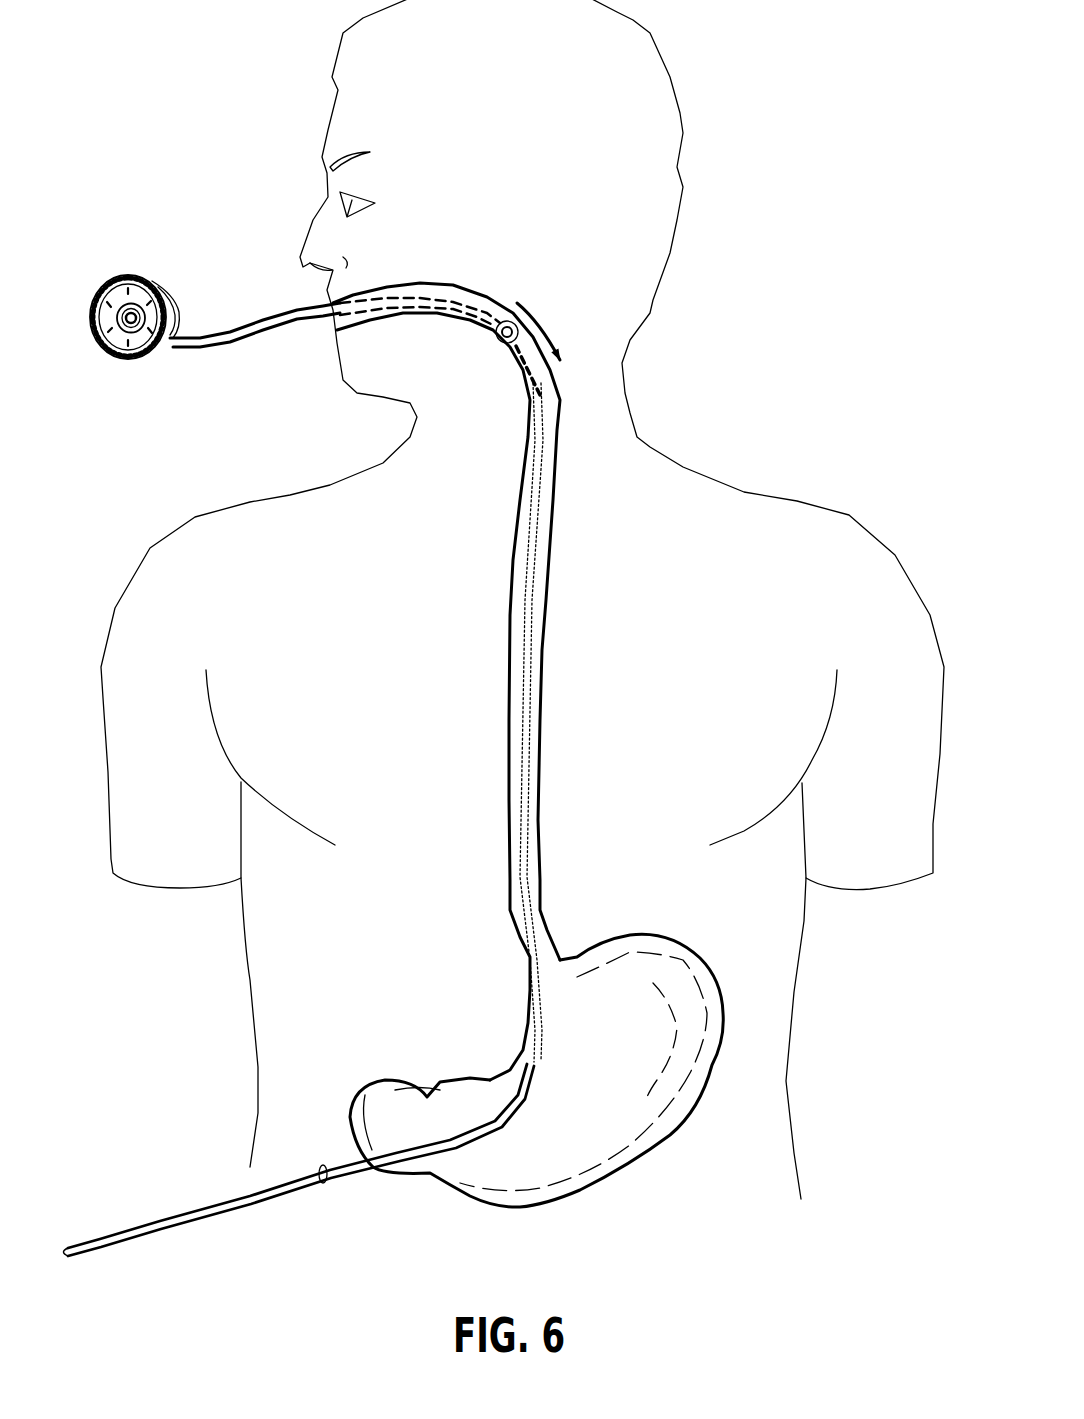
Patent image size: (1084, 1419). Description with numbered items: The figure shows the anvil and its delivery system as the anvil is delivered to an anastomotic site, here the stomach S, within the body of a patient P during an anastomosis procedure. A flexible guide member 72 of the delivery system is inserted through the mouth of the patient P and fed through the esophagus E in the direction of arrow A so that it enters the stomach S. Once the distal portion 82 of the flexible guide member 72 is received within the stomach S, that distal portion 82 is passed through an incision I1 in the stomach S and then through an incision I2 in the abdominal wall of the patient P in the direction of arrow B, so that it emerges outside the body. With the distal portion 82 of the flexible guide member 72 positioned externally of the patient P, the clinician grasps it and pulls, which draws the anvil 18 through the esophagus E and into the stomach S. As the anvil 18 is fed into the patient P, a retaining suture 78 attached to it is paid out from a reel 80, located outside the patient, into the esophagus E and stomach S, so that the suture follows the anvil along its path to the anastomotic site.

The reel 80 is at (121, 284).
The retaining suture 78 is at (234, 333).
The anvil 18 is at (492, 339).
The flexible guide member 72 is at (524, 744).
The distal portion 82 is at (77, 1255).
The patient P is at (686, 113).
The arrow / abdominal wall A is at (540, 315).
The esophagus E is at (568, 430).
The stomach S is at (740, 987).
The incision in the stomach I1 is at (541, 1077).
The incision in the abdominal wall I2 is at (326, 1183).
The arrow B is at (307, 1200).